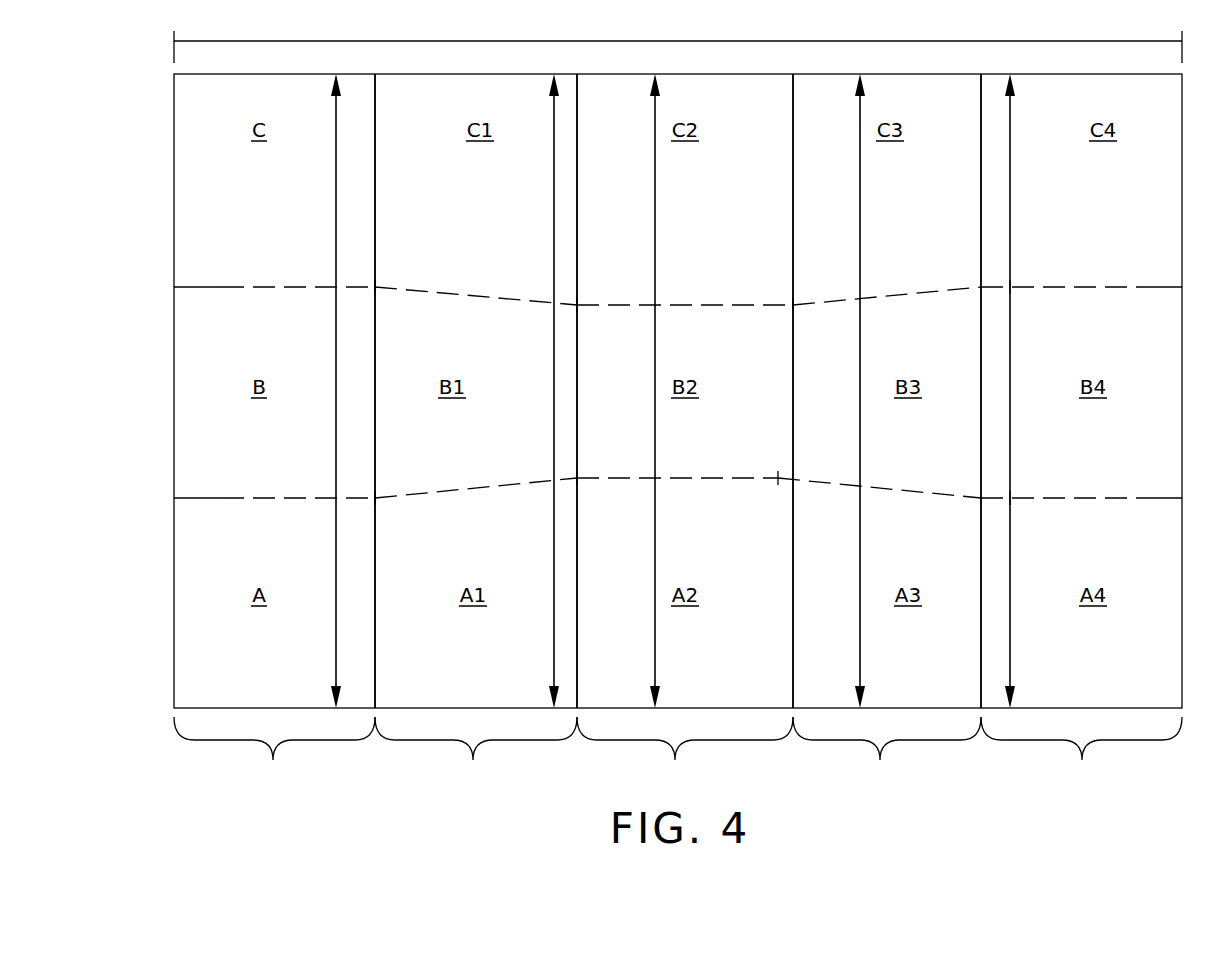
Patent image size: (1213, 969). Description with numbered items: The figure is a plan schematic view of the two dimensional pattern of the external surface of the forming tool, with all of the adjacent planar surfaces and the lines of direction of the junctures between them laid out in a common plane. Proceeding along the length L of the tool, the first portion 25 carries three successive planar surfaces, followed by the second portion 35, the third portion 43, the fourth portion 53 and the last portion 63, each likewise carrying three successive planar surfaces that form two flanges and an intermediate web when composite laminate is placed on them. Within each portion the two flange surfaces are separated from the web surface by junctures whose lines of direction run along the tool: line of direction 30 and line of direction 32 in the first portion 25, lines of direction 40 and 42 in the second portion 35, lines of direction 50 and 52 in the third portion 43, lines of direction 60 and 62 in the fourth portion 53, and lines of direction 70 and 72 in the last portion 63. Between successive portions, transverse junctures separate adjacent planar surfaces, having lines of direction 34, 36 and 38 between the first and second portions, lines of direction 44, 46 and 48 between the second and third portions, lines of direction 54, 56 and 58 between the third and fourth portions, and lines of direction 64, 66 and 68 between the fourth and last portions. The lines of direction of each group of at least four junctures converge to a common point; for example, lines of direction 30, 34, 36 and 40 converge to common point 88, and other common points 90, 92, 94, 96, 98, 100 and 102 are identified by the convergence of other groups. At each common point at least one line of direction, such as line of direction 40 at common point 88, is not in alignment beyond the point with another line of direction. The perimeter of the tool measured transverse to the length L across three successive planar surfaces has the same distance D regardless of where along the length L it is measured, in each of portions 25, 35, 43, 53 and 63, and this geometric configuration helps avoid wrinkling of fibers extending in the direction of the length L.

The first portion 25 is at (273, 760).
The second portion 35 is at (473, 760).
The third portion 43 is at (675, 760).
The fourth portion 53 is at (880, 760).
The fifth portion 63 is at (1082, 760).
The line of direction 30 is at (265, 498).
The line of direction 32 is at (265, 287).
The line of direction 34 is at (375, 567).
The line of direction 36 is at (375, 355).
The line of direction 38 is at (375, 184).
The line of direction 40 is at (483, 488).
The line of direction 42 is at (467, 296).
The line of direction 44 is at (577, 567).
The line of direction 46 is at (577, 376).
The line of direction 48 is at (577, 190).
The line of direction 50 is at (710, 478).
The line of direction 52 is at (708, 305).
The line of direction 54 is at (793, 573).
The line of direction 56 is at (793, 377).
The line of direction 58 is at (793, 182).
The line of direction 60 is at (900, 490).
The line of direction 62 is at (900, 294).
The line of direction 64 is at (981, 575).
The line of direction 66 is at (981, 437).
The line of direction 68 is at (981, 170).
The line of direction 70 is at (1093, 498).
The line of direction 72 is at (1093, 287).
The common point 88 is at (375, 498).
The common point 90 is at (375, 287).
The common point 92 is at (577, 305).
The common point 94 is at (577, 478).
The common point 96 is at (778, 478).
The common point 98 is at (793, 305).
The common point 100 is at (1010, 498).
The common point 102 is at (1010, 287).
The distance D is at (336, 645).
The length L is at (677, 41).